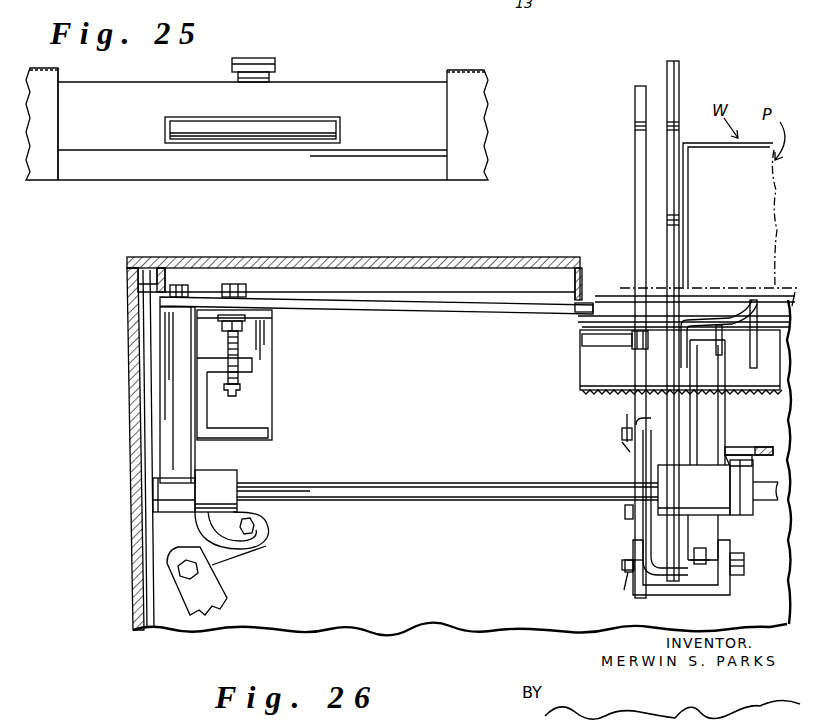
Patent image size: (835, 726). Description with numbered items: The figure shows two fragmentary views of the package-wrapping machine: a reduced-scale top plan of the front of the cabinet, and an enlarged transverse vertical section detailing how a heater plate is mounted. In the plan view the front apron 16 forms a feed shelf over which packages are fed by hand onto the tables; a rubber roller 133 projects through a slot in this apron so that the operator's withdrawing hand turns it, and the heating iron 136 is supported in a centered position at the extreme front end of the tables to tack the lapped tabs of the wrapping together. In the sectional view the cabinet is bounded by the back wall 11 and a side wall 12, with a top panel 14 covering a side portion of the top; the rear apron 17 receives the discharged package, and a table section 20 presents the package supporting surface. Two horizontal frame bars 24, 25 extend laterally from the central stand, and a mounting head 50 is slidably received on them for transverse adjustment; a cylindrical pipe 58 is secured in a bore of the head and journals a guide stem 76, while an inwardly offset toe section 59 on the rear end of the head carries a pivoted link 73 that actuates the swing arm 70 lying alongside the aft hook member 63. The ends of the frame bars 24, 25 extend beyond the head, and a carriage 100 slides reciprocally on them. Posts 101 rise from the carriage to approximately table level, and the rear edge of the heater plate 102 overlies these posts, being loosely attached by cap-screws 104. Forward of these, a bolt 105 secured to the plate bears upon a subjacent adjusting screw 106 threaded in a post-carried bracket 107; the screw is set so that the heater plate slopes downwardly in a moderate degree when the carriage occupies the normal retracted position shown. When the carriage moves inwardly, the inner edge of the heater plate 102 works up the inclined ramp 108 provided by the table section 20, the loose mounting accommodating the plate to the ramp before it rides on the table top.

In FIG. 26, the back wall 11 is at (430, 624).
In FIG. 26, the side wall 12 is at (134, 469).
In FIG. 26, the top panel 14 is at (421, 266).
In FIG. 25, the front apron 16 is at (355, 92).
In FIG. 26, the rear apron 17 is at (604, 298).
In FIG. 26, the table section 20 is at (766, 303).
In FIG. 26, the horizontal frame bar 24 is at (479, 488).
In FIG. 26, the horizontal frame bar 25 is at (306, 490).
In FIG. 26, the mounting head 50 is at (718, 500).
In FIG. 26, the cylindrical pipe 58 is at (718, 416).
In FIG. 26, the toe section 59 is at (675, 585).
In FIG. 26, the aft hook member 63 is at (683, 90).
In FIG. 26, the swing arm 70 is at (637, 165).
In FIG. 26, the link 73 is at (648, 520).
In FIG. 26, the guide stem 76 is at (698, 568).
In FIG. 26, the carriage 100 is at (208, 478).
In FIG. 26, the post 101 is at (175, 363).
In FIG. 26, the heater plate 102 is at (392, 307).
In FIG. 26, the cap-screw 104 is at (178, 290).
In FIG. 26, the bolt 105 is at (240, 336).
In FIG. 26, the adjusting screw 106 is at (240, 357).
In FIG. 26, the bracket 107 is at (206, 398).
In FIG. 26, the inclined ramp 108 is at (718, 307).
In FIG. 25, the roller 133 is at (230, 130).
In FIG. 25, the heating iron 136 is at (258, 62).